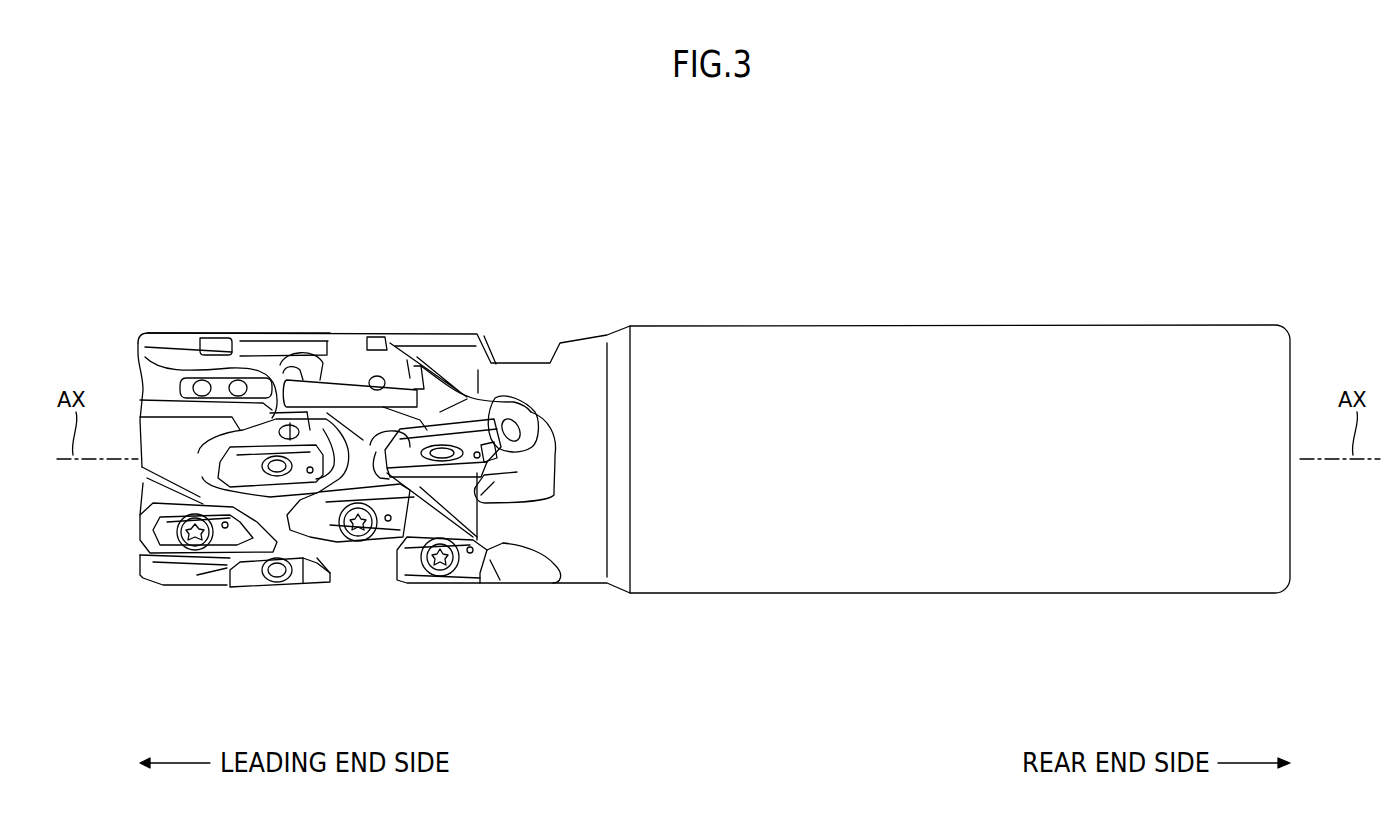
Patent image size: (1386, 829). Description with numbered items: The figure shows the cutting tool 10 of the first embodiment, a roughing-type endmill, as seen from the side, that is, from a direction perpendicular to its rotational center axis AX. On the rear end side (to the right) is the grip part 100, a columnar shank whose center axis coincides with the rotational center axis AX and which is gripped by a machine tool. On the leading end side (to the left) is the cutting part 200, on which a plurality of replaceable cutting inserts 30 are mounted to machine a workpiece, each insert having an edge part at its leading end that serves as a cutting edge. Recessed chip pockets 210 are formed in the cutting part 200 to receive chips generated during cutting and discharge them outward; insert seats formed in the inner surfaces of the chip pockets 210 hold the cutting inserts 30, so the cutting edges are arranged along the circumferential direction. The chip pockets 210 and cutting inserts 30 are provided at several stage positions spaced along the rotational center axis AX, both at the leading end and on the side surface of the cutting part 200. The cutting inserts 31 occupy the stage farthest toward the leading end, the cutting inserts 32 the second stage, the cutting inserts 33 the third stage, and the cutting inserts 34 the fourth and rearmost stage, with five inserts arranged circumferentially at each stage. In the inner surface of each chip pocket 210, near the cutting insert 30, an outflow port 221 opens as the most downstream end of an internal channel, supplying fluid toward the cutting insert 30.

The cutting tool 10 is at (1183, 189).
The grip part 100 is at (939, 311).
The cutting part 200 is at (298, 324).
The chip pocket 210 is at (155, 370).
The outflow port 221 is at (196, 378).
The cutting insert 30 is at (170, 410).
The cutting insert 31 is at (208, 534).
The cutting insert 32 is at (273, 503).
The cutting insert 33 is at (350, 513).
The cutting insert 34 is at (444, 501).